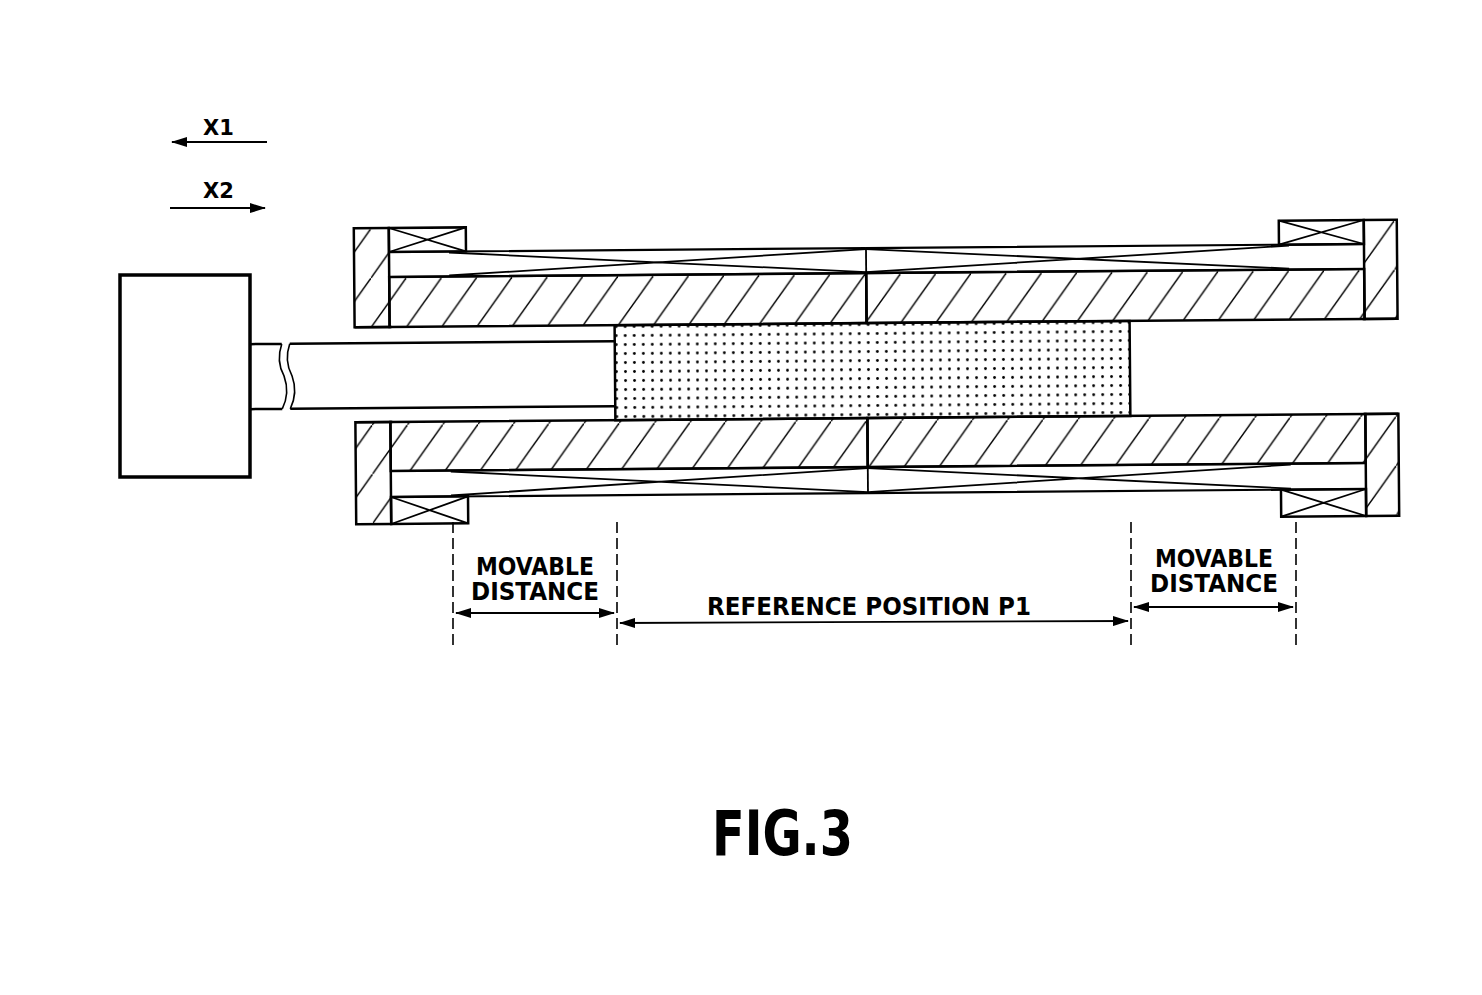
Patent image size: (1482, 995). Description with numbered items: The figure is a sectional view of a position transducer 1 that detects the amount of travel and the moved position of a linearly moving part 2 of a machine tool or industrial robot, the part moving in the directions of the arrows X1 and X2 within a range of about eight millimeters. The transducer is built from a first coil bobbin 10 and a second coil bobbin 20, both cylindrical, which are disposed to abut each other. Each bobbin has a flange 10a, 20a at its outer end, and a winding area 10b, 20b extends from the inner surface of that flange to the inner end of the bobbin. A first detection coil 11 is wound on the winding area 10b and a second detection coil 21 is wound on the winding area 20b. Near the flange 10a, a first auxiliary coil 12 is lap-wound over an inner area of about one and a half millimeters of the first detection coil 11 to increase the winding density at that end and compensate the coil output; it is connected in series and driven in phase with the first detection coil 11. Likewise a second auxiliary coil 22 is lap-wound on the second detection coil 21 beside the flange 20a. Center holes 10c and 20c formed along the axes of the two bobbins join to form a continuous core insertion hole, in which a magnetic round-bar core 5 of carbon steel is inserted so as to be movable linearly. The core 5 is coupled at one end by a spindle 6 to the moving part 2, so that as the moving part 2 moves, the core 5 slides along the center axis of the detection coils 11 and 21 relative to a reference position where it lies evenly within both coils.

The position transducer 1 is at (1025, 110).
The moving part 2 is at (186, 483).
The core 5 is at (736, 345).
The spindle 6 is at (318, 392).
The first coil bobbin 10 is at (788, 292).
The flange 10a is at (374, 243).
The winding area 10b is at (574, 281).
The center hole 10c is at (353, 335).
The first detection coil 11 is at (676, 252).
The first auxiliary coil 12 is at (444, 227).
The second coil bobbin 20 is at (935, 292).
The flange 20a is at (1381, 241).
The winding area 20b is at (1164, 253).
The center hole 20c is at (1380, 323).
The second detection coil 21 is at (1061, 253).
The second auxiliary coil 22 is at (1319, 229).